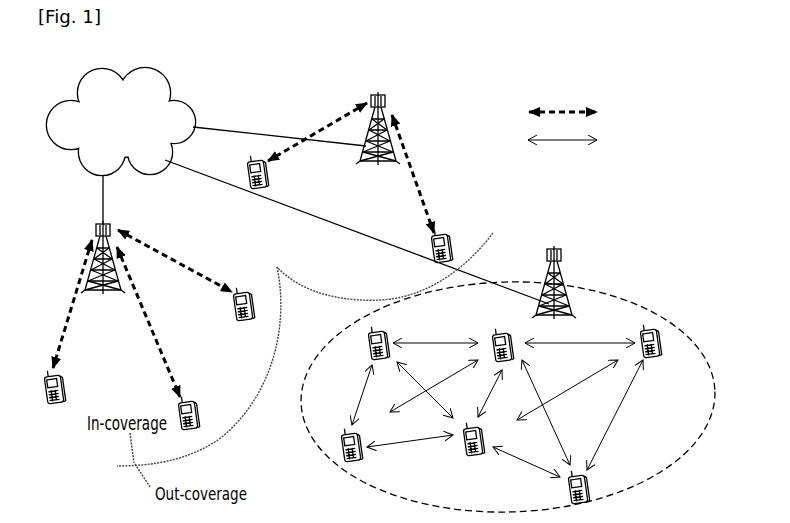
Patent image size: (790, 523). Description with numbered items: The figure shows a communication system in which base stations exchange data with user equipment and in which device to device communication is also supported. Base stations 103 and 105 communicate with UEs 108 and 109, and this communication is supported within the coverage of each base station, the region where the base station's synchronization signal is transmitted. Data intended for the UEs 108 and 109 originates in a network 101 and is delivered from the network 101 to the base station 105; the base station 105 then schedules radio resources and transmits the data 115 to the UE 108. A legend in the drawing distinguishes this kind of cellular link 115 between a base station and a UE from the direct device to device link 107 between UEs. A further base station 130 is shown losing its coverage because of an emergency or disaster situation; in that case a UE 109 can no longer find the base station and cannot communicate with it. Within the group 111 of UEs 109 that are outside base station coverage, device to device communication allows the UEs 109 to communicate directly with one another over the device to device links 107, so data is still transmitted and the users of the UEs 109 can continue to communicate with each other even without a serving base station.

The network 101 is at (141, 69).
The base station 103 is at (386, 94).
The base station 105 is at (96, 226).
The D2D link 107 is at (645, 148).
The UE 108 is at (267, 178).
The UE 109 is at (386, 333).
The D2D group 111 is at (613, 291).
The data 115 is at (414, 168).
The base station 130 is at (562, 257).